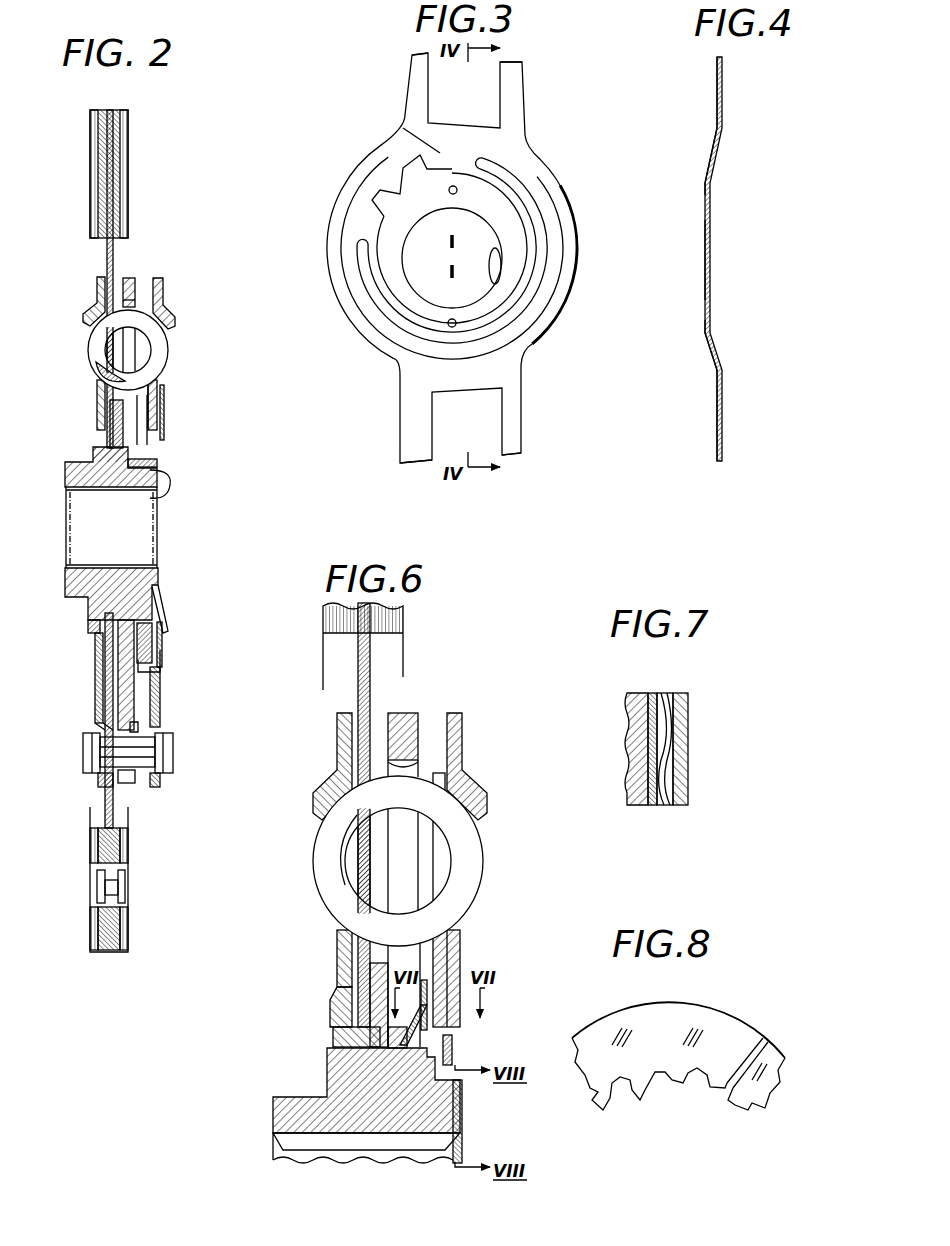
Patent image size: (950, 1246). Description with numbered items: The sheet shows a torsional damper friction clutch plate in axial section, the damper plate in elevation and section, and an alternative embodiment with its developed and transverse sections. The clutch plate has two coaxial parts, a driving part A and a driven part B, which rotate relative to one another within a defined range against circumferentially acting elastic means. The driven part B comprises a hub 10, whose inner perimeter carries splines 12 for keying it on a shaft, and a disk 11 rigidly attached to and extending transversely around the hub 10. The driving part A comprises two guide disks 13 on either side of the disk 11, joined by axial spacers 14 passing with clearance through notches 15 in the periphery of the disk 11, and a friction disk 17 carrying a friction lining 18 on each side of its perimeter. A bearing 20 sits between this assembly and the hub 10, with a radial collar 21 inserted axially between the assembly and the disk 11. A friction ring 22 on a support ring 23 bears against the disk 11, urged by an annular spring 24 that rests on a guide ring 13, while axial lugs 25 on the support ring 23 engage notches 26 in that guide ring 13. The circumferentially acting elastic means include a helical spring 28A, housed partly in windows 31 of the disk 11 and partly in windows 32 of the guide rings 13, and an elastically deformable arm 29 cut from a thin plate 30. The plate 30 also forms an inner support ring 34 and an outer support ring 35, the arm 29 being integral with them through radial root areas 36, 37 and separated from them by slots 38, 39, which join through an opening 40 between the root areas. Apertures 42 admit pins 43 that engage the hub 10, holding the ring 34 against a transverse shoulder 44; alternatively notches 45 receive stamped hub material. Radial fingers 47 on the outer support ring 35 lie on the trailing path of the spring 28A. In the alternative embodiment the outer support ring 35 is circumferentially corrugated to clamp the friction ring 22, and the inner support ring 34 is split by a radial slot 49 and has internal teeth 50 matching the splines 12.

In FIG. 2, the hub 10 is at (64, 455).
In FIG. 6, the hub 10 is at (274, 1093).
In FIG. 2, the disk 11 is at (136, 277).
In FIG. 6, the disk 11 is at (420, 715).
In FIG. 7, the disk 11 is at (645, 808).
In FIG. 2, the splines 12 is at (145, 562).
In FIG. 2, the guide disks 13 is at (97, 278).
In FIG. 6, the guide disks 13 is at (338, 718).
In FIG. 7, the guide disks 13 is at (684, 806).
In FIG. 2, the axial spacers 14 is at (164, 753).
In FIG. 2, the notches 15 is at (138, 727).
In FIG. 2, the friction disk 17 is at (100, 800).
In FIG. 6, the friction disk 17 is at (356, 680).
In FIG. 2, the friction lining 18 is at (125, 945).
In FIG. 6, the friction lining 18 is at (378, 630).
In FIG. 2, the bearing 20 is at (99, 629).
In FIG. 2, the radial collar 21 is at (110, 662).
In FIG. 2, the friction ring 22 is at (130, 446).
In FIG. 6, the friction ring 22 is at (405, 1040).
In FIG. 7, the friction ring 22 is at (652, 693).
In FIG. 2, the support ring 23 is at (142, 622).
In FIG. 2, the annular spring 24 is at (148, 381).
In FIG. 2, the axial lugs 25 is at (155, 665).
In FIG. 2, the notches 26 is at (158, 660).
In FIG. 2, the helical spring 28A is at (92, 353).
In FIG. 6, the helical spring 28A is at (343, 902).
In FIG. 2, the elastically deformable arm 29 is at (162, 624).
In FIG. 3, the elastically deformable arm 29 is at (560, 254).
In FIG. 4, the elastically deformable arm 29 is at (718, 363).
In FIG. 6, the elastically deformable arm 29 is at (454, 1050).
In FIG. 2, the thin plate 30 is at (168, 416).
In FIG. 3, the thin plate 30 is at (558, 175).
In FIG. 4, the thin plate 30 is at (724, 120).
In FIG. 6, the thin plate 30 is at (464, 1100).
In FIG. 7, the thin plate 30 is at (666, 808).
In FIG. 8, the thin plate 30 is at (748, 1021).
In FIG. 2, the windows 31 is at (130, 300).
In FIG. 6, the windows 31 is at (420, 765).
In FIG. 2, the windows 32 is at (90, 322).
In FIG. 2, the inner support ring 34 is at (158, 597).
In FIG. 3, the inner support ring 34 is at (505, 309).
In FIG. 4, the inner support ring 34 is at (712, 308).
In FIG. 6, the inner support ring 34 is at (462, 1130).
In FIG. 8, the inner support ring 34 is at (585, 1040).
In FIG. 2, the outer support ring 35 is at (163, 395).
In FIG. 3, the outer support ring 35 is at (565, 215).
In FIG. 4, the outer support ring 35 is at (720, 383).
In FIG. 6, the outer support ring 35 is at (450, 950).
In FIG. 7, the outer support ring 35 is at (667, 693).
In FIG. 3, the root area 36 is at (372, 217).
In FIG. 3, the root area 37 is at (402, 130).
In FIG. 4, the root area 37 is at (724, 147).
In FIG. 3, the slot 38 is at (530, 292).
In FIG. 4, the slot 38 is at (712, 352).
In FIG. 3, the slot 39 is at (562, 268).
In FIG. 4, the slot 39 is at (717, 368).
In FIG. 3, the opening 40 is at (400, 176).
In FIG. 3, the apertures 42 is at (455, 186).
In FIG. 4, the apertures 42 is at (712, 192).
In FIG. 2, the pins 43 is at (160, 462).
In FIG. 2, the transverse shoulder 44 is at (158, 494).
In FIG. 3, the notches 45 is at (452, 208).
In FIG. 3, the radial finger 47 is at (412, 66).
In FIG. 4, the radial finger 47 is at (724, 69).
In FIG. 6, the radial finger 47 is at (440, 862).
In FIG. 8, the radial slot 49 is at (762, 1040).
In FIG. 8, the teeth 50 is at (658, 1078).
In FIG. 2, the driving part A is at (132, 189).
In FIG. 6, the driving part A is at (420, 676).
In FIG. 2, the driven part B is at (170, 467).
In FIG. 6, the driven part B is at (295, 1084).